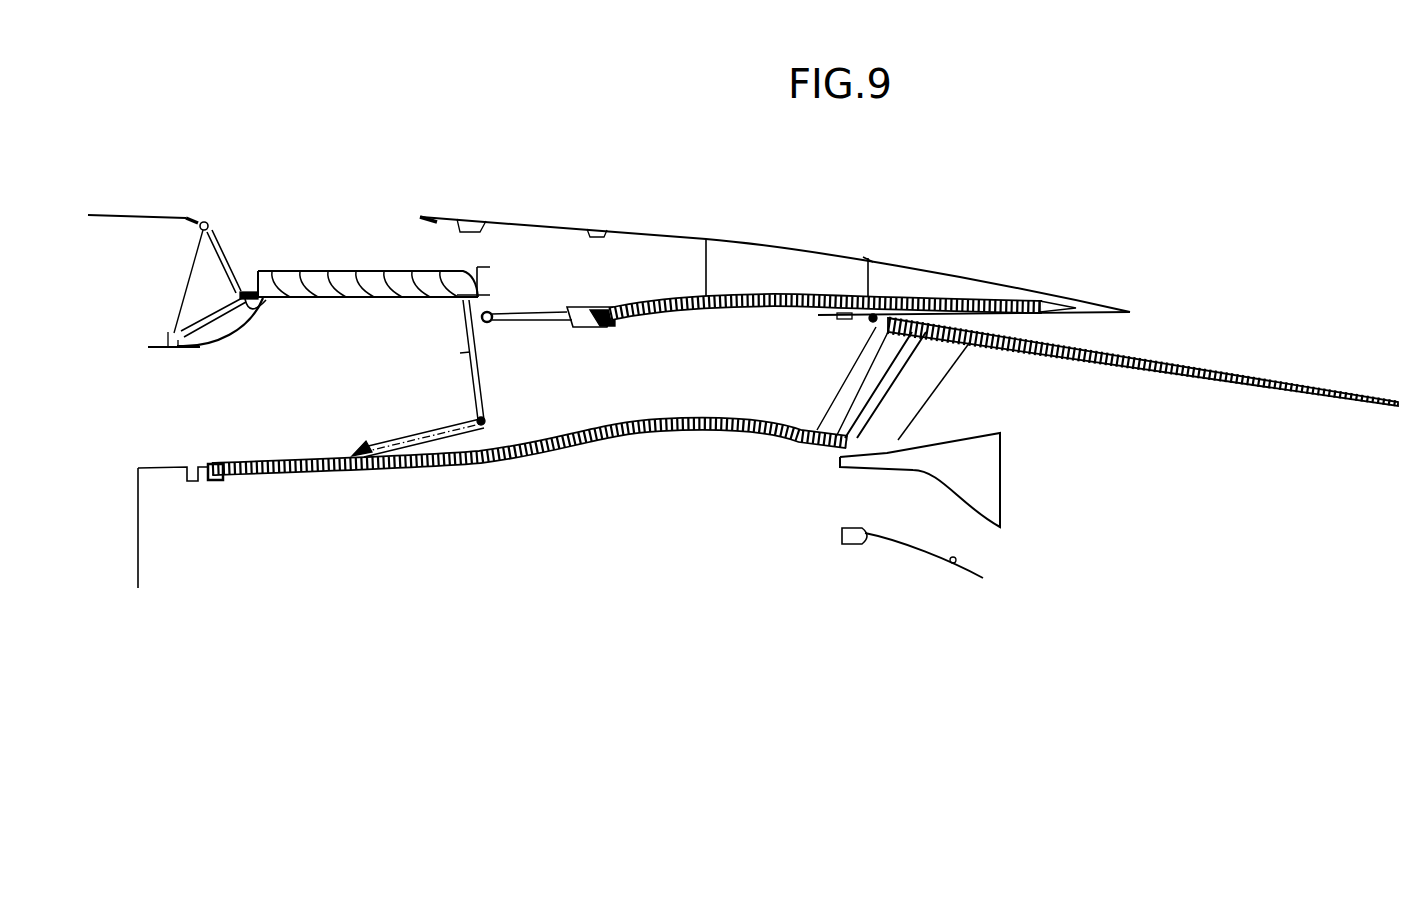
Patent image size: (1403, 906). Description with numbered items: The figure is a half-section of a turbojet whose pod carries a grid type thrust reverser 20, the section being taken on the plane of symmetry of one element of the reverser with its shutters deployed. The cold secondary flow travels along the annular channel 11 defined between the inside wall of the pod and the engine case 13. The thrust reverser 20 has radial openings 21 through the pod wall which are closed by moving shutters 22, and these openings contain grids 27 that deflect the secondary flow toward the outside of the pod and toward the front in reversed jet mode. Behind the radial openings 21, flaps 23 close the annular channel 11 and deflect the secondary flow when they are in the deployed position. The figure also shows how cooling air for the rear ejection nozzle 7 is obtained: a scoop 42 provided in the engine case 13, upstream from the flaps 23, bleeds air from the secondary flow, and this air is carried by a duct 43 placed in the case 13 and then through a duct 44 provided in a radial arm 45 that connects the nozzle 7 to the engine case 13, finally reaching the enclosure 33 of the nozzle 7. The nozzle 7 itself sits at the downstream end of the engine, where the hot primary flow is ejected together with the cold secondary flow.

The rear ejection nozzle 7 is at (1193, 364).
The annular channel 11 is at (262, 379).
The engine case 13 is at (556, 438).
The thrust reverser 20 is at (364, 247).
The radial openings 21 is at (253, 241).
The moving shutters 22 is at (810, 266).
The flaps 23 is at (470, 398).
The grids 27 is at (344, 288).
The enclosure of the nozzle 33 is at (983, 348).
The scoop 42 is at (248, 457).
The duct 43 is at (457, 467).
The duct 44 is at (903, 351).
The radial arm 45 is at (852, 391).